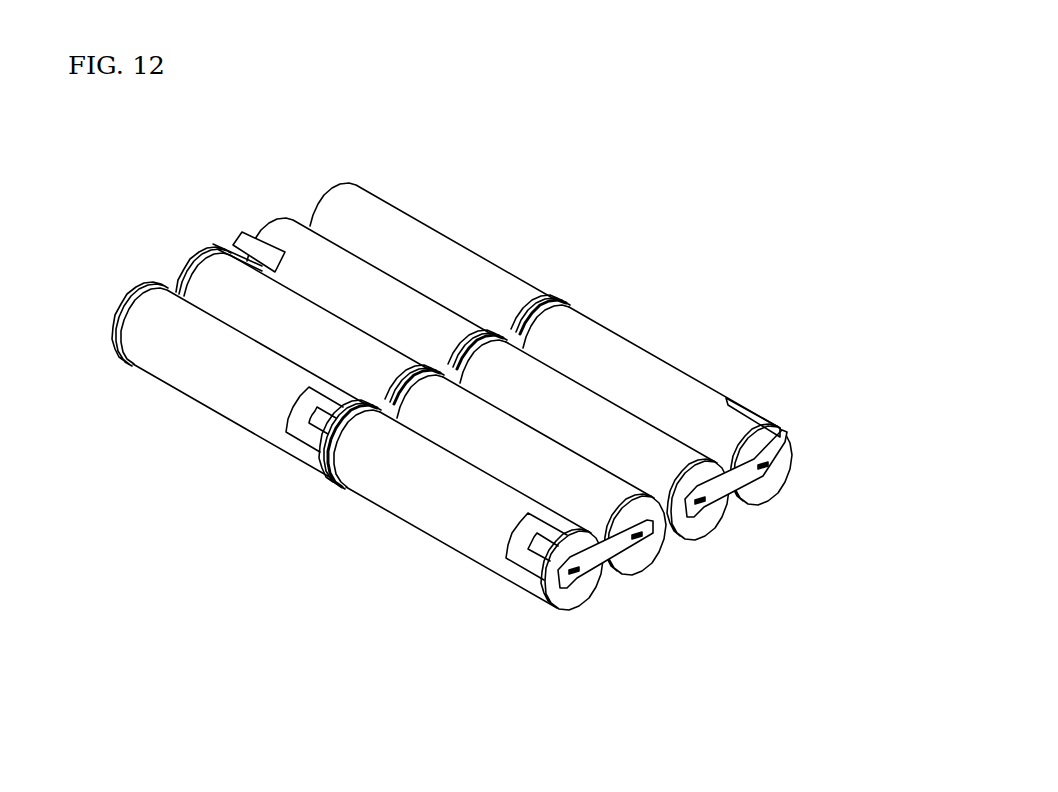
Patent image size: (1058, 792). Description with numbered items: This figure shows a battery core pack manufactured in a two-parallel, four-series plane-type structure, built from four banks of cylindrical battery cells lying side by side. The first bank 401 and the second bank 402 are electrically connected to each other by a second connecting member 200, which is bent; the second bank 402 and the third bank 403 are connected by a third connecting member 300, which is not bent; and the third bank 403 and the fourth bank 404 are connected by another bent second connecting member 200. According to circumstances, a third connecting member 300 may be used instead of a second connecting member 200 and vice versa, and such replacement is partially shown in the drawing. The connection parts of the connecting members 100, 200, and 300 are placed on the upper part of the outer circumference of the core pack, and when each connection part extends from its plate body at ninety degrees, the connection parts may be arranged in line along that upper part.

The connecting member 100 is at (560, 608).
The second connecting member 200 is at (537, 292).
The third connecting member 300 is at (112, 316).
The first bank 401 is at (690, 568).
The second bank 402 is at (206, 229).
The third bank 403 is at (318, 162).
The fourth bank 404 is at (808, 500).